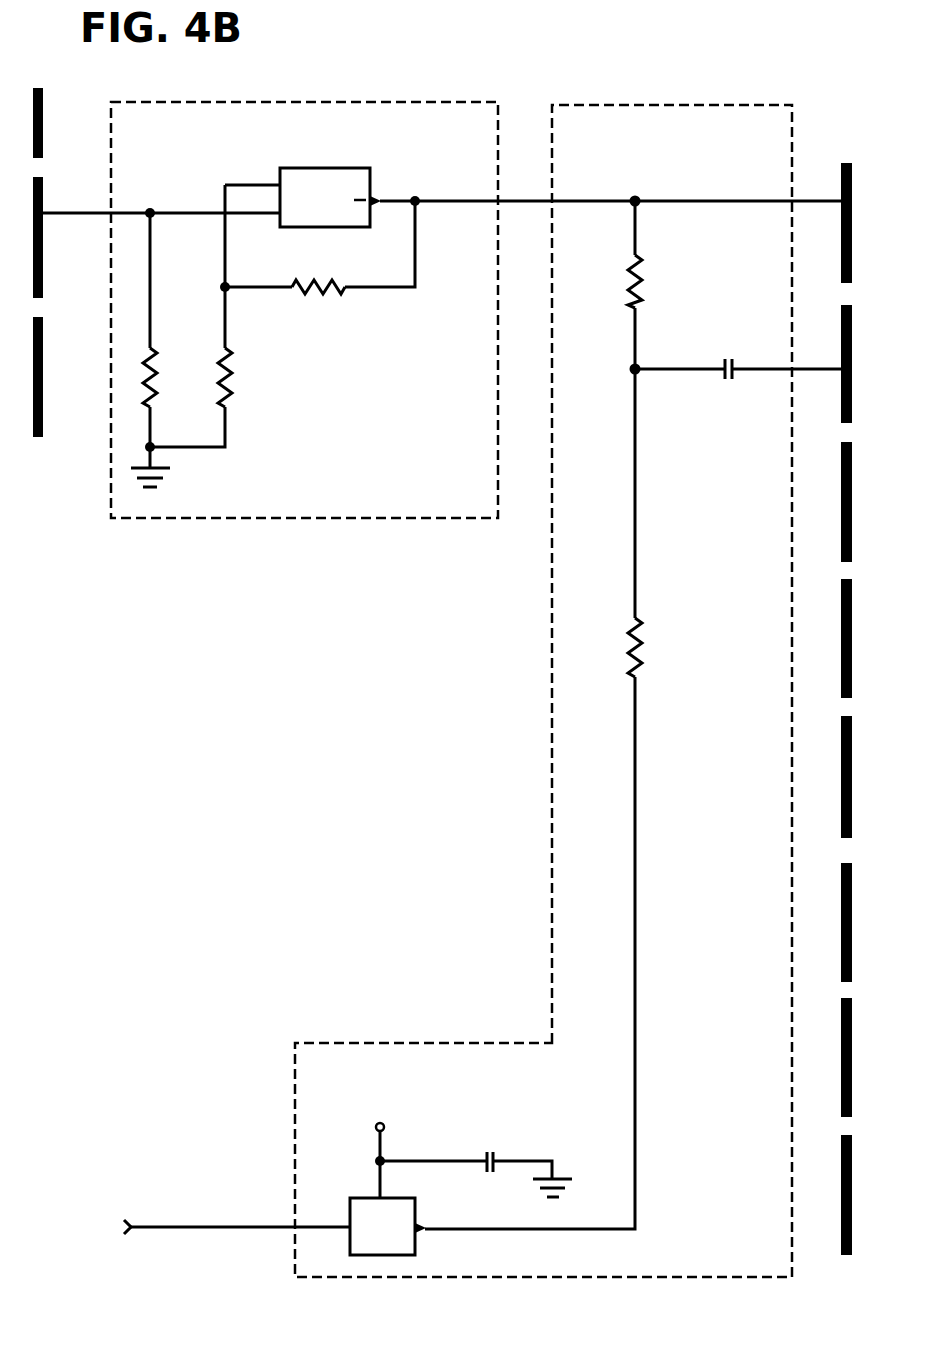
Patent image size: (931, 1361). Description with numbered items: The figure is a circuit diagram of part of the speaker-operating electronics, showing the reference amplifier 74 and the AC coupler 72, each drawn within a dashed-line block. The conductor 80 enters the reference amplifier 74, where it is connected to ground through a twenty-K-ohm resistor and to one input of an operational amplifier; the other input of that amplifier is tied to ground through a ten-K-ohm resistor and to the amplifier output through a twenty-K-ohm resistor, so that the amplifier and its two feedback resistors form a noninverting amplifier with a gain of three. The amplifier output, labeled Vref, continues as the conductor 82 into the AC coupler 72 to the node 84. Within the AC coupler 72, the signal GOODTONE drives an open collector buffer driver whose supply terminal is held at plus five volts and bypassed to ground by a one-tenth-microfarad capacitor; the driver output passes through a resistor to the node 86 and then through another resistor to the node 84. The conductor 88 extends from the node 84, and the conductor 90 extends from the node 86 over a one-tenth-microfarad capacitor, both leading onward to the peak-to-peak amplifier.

The AC coupler 72 is at (552, 598).
The reference amplifier 74 is at (328, 520).
The conductor 80 is at (63, 213).
The conductor 82 is at (585, 201).
The node 84 is at (635, 201).
The node 86 is at (637, 371).
The conductor 88 is at (697, 203).
The conductor 90 is at (695, 369).